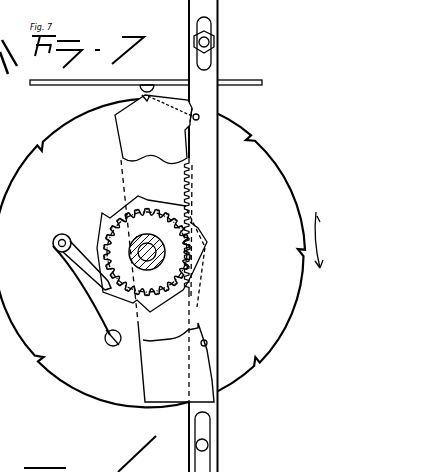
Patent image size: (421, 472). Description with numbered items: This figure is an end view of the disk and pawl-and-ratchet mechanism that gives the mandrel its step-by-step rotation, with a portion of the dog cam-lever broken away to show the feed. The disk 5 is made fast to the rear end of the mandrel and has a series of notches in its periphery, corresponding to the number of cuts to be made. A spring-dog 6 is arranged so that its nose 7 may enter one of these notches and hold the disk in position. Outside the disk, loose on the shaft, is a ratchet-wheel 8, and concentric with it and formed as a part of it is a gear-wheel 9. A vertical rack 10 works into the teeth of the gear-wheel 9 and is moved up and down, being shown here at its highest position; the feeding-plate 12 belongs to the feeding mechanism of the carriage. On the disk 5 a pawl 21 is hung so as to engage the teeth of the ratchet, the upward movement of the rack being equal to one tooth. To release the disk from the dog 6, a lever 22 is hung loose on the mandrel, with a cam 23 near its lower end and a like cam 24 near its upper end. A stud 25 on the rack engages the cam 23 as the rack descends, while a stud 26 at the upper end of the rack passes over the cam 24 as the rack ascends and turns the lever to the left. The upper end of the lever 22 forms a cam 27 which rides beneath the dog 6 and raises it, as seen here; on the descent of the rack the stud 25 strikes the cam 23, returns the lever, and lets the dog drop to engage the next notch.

The disk 5 is at (152, 252).
The spring-dog 6 is at (146, 75).
The nose 7 is at (150, 86).
The ratchet-wheel 8 is at (152, 254).
The gear-wheel 9 is at (147, 252).
The rack 10 is at (201, 236).
The feeding-plate 12 is at (151, 253).
The pawl 21 is at (87, 290).
The lever 22 is at (153, 129).
The cam 23 is at (176, 362).
The cam 24 is at (181, 123).
The stud 25 is at (219, 330).
The stud 26 is at (181, 110).
The cam 27 is at (146, 101).